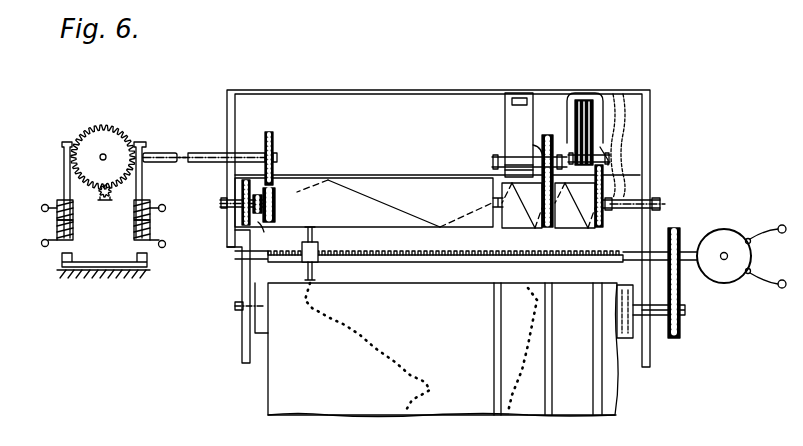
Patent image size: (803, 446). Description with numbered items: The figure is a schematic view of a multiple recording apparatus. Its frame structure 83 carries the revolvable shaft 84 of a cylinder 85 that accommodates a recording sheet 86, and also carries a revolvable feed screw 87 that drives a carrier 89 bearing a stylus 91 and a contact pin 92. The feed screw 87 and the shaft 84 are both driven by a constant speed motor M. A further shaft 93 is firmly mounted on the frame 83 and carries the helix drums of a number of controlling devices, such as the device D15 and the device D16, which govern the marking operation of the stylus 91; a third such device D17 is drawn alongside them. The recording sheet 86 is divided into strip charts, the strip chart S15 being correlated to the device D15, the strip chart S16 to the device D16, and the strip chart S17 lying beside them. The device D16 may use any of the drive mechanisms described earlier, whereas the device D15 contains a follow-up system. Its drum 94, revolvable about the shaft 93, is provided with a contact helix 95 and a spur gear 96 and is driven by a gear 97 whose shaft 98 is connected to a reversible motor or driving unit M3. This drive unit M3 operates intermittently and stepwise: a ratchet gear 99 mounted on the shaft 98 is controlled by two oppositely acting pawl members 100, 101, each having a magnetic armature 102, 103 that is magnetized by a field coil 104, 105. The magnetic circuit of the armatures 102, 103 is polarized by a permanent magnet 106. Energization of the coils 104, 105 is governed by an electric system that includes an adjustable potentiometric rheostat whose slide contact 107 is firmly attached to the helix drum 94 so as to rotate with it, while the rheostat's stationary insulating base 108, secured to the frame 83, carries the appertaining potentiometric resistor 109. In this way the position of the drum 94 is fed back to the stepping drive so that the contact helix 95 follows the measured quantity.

The frame structure 83 is at (227, 110).
The revolvable shaft 84 is at (235, 306).
The cylinder 85 is at (242, 282).
The recording sheet 86 is at (268, 386).
The feed screw 87 is at (414, 256).
The carrier 89 is at (304, 260).
The stylus 91 is at (318, 272).
The contact pin 92 is at (318, 238).
The shaft 93 is at (222, 201).
The drum 94 is at (407, 188).
The contact helix 95 is at (385, 208).
The spur gear 96 is at (275, 213).
The gear 97 is at (265, 134).
The shaft 98 is at (210, 159).
The ratchet gear 99 is at (97, 126).
The pawl member 100 is at (64, 162).
The pawl member 101 is at (142, 180).
The magnetic armature 102 is at (58, 203).
The magnetic armature 103 is at (146, 203).
The field coil 104 is at (58, 228).
The field coil 105 is at (148, 228).
The permanent magnet 106 is at (62, 264).
The slide contact 107 is at (262, 215).
The insulating base 108 is at (243, 215).
The potentiometric resistor 109 is at (242, 185).
The reversible motor or driving unit M3 is at (117, 239).
The constant speed motor M is at (720, 232).
The device D15 is at (388, 172).
The device D16 is at (537, 87).
The drum D17 is at (595, 87).
The strip chart S15 is at (337, 404).
The strip chart S16 is at (538, 407).
The sheet section S17 is at (585, 407).